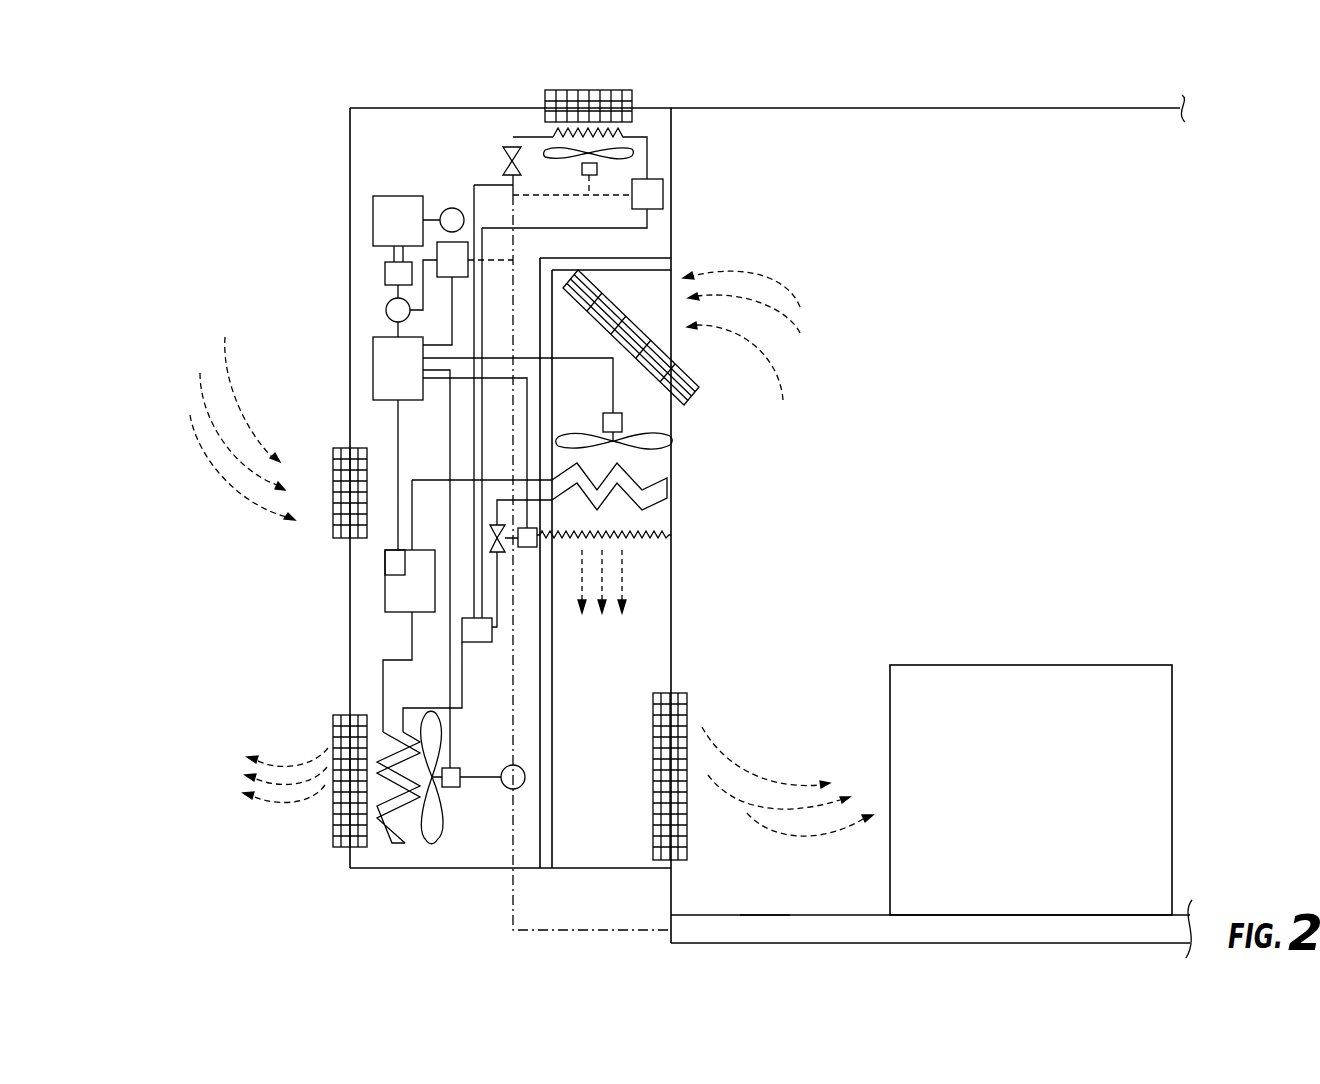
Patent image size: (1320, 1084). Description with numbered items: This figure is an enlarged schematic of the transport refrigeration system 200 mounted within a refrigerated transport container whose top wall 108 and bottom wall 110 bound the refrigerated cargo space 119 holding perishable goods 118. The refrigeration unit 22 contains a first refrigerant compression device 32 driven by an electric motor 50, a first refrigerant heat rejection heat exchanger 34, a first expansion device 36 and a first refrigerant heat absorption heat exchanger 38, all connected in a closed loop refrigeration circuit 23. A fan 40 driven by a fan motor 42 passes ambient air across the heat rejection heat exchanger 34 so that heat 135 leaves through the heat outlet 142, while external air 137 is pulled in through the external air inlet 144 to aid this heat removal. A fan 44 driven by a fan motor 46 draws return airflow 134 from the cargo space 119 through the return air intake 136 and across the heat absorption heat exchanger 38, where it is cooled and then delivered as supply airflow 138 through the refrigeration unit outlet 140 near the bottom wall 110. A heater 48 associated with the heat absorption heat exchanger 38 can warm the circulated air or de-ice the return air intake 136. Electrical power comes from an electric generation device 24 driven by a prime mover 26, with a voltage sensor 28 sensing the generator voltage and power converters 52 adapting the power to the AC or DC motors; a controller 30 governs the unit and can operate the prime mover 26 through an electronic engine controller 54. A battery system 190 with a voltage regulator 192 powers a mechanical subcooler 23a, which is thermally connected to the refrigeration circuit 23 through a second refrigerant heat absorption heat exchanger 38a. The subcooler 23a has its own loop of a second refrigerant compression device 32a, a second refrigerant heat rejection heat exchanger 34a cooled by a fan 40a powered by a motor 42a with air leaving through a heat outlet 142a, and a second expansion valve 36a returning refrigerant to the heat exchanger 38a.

The transport refrigeration system 200 is at (170, 150).
The refrigeration unit 22 is at (350, 142).
The top wall 108 is at (945, 107).
The mechanical subcooler 23a is at (748, 142).
The heat outlet 142a is at (578, 90).
The second refrigerant heat rejection heat exchanger 34a is at (625, 132).
The second expansion valve 36a is at (503, 146).
The fan 40a is at (557, 160).
The motor 42a is at (597, 168).
The second refrigerant compression device 32a is at (663, 194).
The electronic engine controller 54 is at (452, 208).
The prime mover 26 is at (373, 213).
The electric generation device 24 is at (382, 272).
The voltage sensor 28 is at (386, 313).
The controller 30 is at (449, 277).
The power converters 52 is at (373, 357).
The return air intake 136 is at (643, 330).
The return airflow 134 is at (797, 333).
The refrigerated cargo space 119 is at (1062, 300).
The fan motor 46 is at (603, 418).
The fan 44 is at (667, 443).
The first refrigerant heat absorption heat exchanger 38 is at (667, 483).
The refrigeration circuit 23 is at (765, 508).
The first expansion device 36 is at (498, 542).
The heater 48 is at (670, 535).
The external air 137 is at (203, 400).
The external air inlet 144 is at (333, 487).
The electric motor 50 is at (388, 563).
The first refrigerant compression device 32 is at (385, 597).
The second refrigerant heat absorption heat exchanger 38a is at (473, 643).
The heat outlet 142 is at (333, 737).
The heat 135 is at (290, 803).
The first refrigerant heat rejection heat exchanger 34 is at (398, 843).
The fan 40 is at (430, 840).
The fan motor 42 is at (453, 788).
The voltage regulator 192 is at (525, 778).
The refrigeration unit outlet 140 is at (653, 713).
The supply airflow 138 is at (763, 783).
The perishable goods 118 is at (887, 683).
The battery system 190 is at (762, 927).
The bottom wall 110 is at (793, 915).